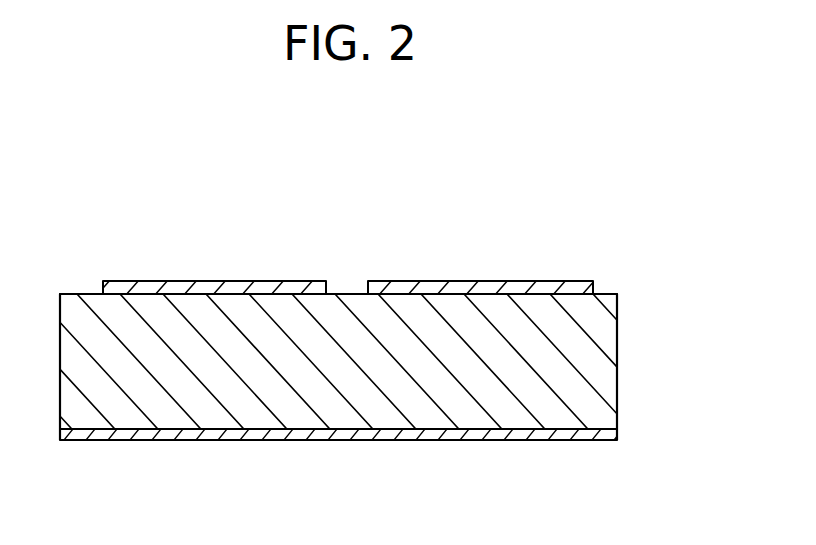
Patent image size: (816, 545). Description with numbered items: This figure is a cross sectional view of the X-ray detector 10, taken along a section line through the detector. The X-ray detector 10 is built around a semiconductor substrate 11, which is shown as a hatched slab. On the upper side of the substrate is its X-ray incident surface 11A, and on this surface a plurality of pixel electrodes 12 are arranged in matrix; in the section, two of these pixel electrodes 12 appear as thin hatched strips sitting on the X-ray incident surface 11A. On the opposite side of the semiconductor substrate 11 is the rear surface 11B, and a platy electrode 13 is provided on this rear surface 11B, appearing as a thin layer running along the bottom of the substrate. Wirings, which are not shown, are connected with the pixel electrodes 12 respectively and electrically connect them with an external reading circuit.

The X-ray detector 10 is at (631, 199).
The semiconductor substrate 11 is at (612, 391).
The X-ray incident surface 11A is at (600, 297).
The rear surface 11B is at (620, 428).
The pixel electrodes 12 is at (502, 287).
The platy electrode 13 is at (453, 438).